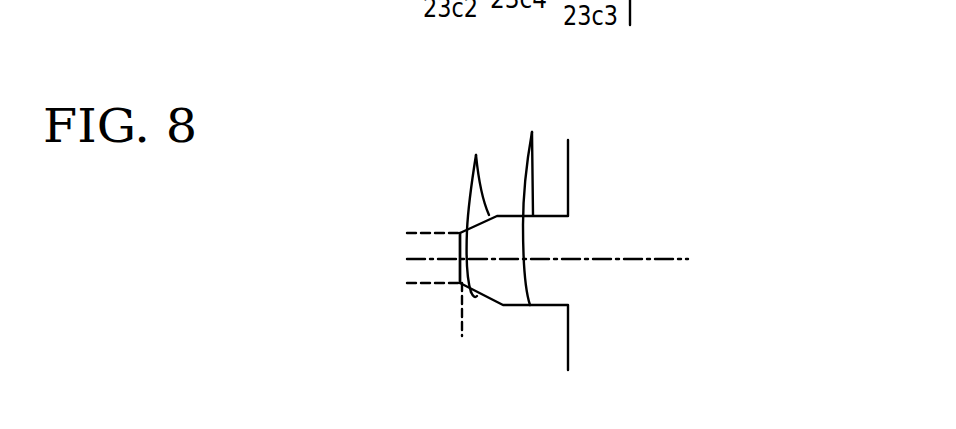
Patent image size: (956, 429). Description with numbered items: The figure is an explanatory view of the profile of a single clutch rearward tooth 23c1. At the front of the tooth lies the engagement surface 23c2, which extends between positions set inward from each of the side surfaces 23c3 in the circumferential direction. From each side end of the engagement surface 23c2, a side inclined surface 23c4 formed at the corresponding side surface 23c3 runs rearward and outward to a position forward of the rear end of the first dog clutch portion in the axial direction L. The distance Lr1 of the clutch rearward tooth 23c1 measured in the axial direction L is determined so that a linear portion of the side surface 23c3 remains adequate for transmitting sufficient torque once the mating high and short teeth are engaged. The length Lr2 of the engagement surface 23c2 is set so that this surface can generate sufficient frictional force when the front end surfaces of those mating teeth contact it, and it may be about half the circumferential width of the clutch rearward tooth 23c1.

The clutch rearward tooth 23c1 is at (434, 192).
The engagement surface 23c2 is at (458, 262).
The side surface 23c3 is at (536, 202).
The side inclined surface 23c4 is at (468, 211).
The axial direction L is at (657, 258).
The distance of the clutch rearward tooth in the axial direction Lr1 is at (552, 350).
The length of the engagement surface Lr2 is at (397, 185).